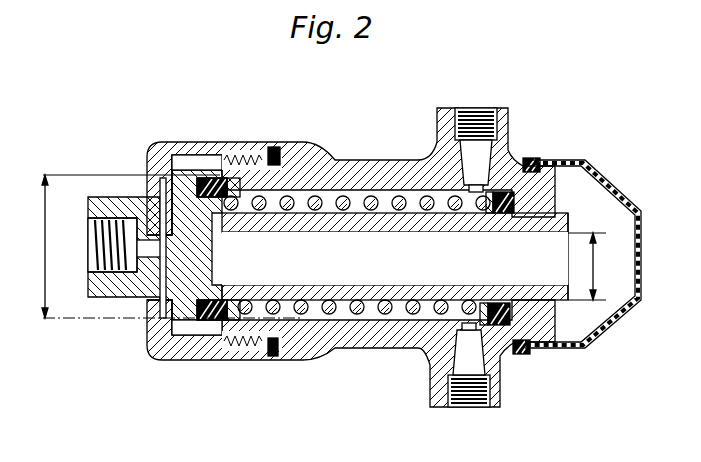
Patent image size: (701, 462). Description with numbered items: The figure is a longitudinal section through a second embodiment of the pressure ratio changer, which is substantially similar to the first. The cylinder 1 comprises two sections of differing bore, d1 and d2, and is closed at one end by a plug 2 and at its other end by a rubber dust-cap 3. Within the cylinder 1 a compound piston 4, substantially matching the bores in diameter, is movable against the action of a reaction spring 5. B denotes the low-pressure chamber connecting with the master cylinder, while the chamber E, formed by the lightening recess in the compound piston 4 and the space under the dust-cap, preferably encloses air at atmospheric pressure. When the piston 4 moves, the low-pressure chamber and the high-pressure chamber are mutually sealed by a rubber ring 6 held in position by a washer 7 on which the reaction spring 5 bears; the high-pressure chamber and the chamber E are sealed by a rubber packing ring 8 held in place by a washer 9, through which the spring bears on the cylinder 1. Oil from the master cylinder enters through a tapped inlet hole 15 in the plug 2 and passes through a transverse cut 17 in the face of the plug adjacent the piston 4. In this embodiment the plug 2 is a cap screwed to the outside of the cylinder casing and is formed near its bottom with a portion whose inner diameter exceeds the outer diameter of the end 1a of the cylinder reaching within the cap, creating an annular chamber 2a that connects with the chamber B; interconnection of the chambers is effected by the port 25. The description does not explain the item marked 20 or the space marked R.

The cylinder 1 is at (380, 180).
The end of the cylinder 1a is at (172, 157).
The plug 2 is at (150, 337).
The annular chamber 2a is at (200, 168).
The rubber dust-cap 3 is at (600, 178).
The compound piston 4 is at (198, 314).
The reaction spring 5 is at (425, 218).
The rubber ring 6 is at (227, 314).
The washer 7 is at (253, 341).
The rubber packing ring 8 is at (527, 162).
The washer 9 is at (507, 178).
The tapped inlet hole 15 is at (92, 226).
The transverse cut 17 is at (148, 228).
The threaded plug 20 is at (470, 118).
The port 25 is at (220, 178).
The chamber E is at (333, 245).
The low-pressure chamber B is at (368, 315).
The annular space R is at (177, 340).
The cylinder section diameter d1 is at (171, 246).
The cylinder section diameter d2 is at (593, 266).